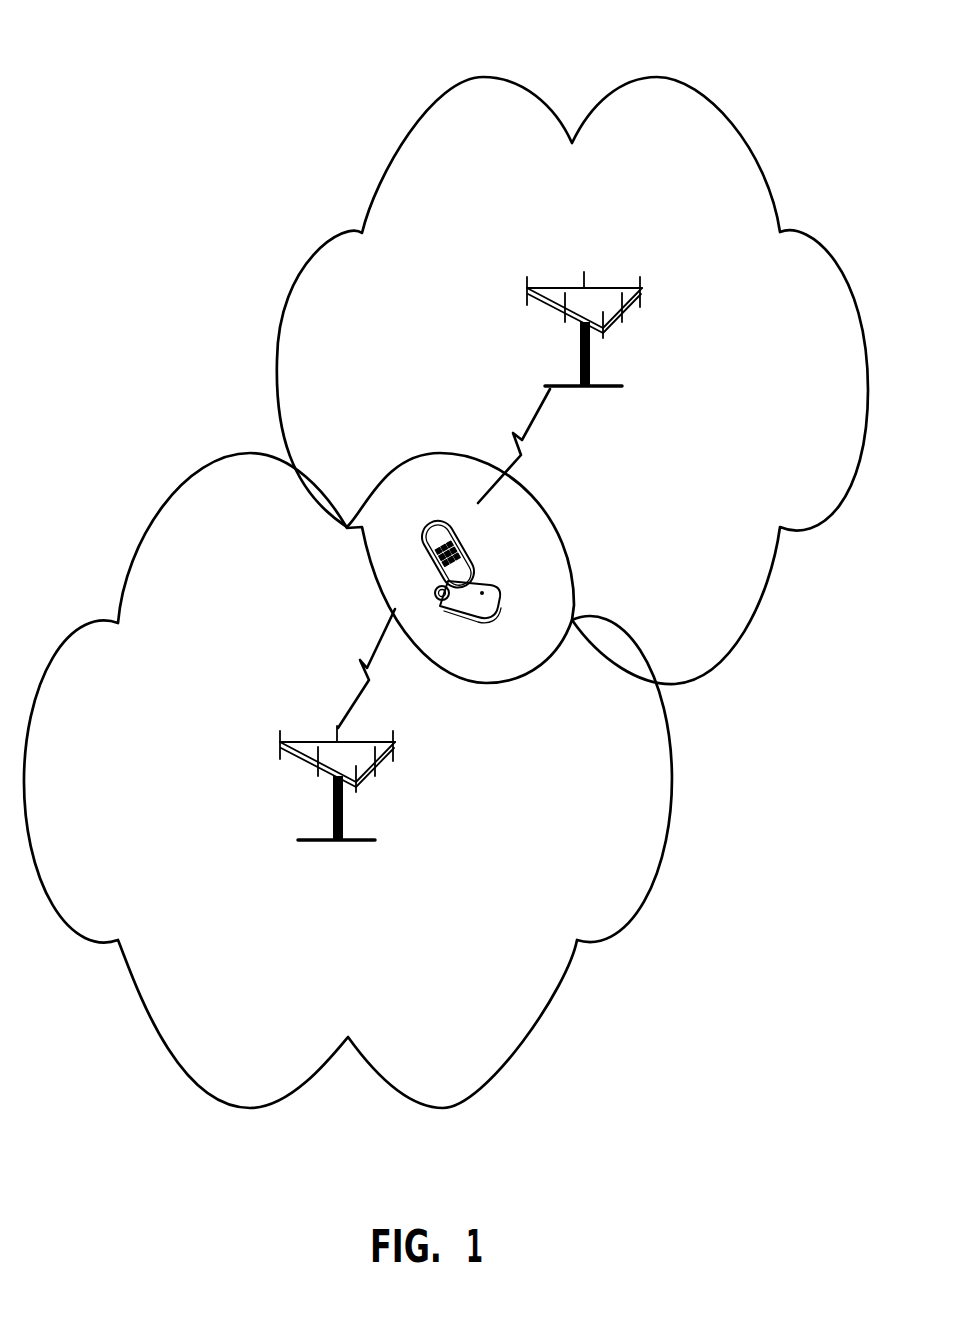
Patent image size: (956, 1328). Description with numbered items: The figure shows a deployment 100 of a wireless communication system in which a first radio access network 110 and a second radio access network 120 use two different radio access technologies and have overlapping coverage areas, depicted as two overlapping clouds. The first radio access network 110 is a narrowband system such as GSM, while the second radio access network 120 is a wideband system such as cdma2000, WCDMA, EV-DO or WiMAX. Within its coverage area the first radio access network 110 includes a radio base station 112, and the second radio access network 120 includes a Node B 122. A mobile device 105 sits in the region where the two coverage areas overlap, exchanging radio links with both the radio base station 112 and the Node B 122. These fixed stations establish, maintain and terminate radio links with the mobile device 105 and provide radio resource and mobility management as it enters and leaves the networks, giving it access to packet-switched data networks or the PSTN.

The deployment 100 is at (237, 107).
The mobile device 105 is at (485, 573).
The first radio access network 110 is at (672, 78).
The radio base station 112 is at (615, 287).
The second radio access network 120 is at (216, 460).
The Node B 122 is at (307, 740).